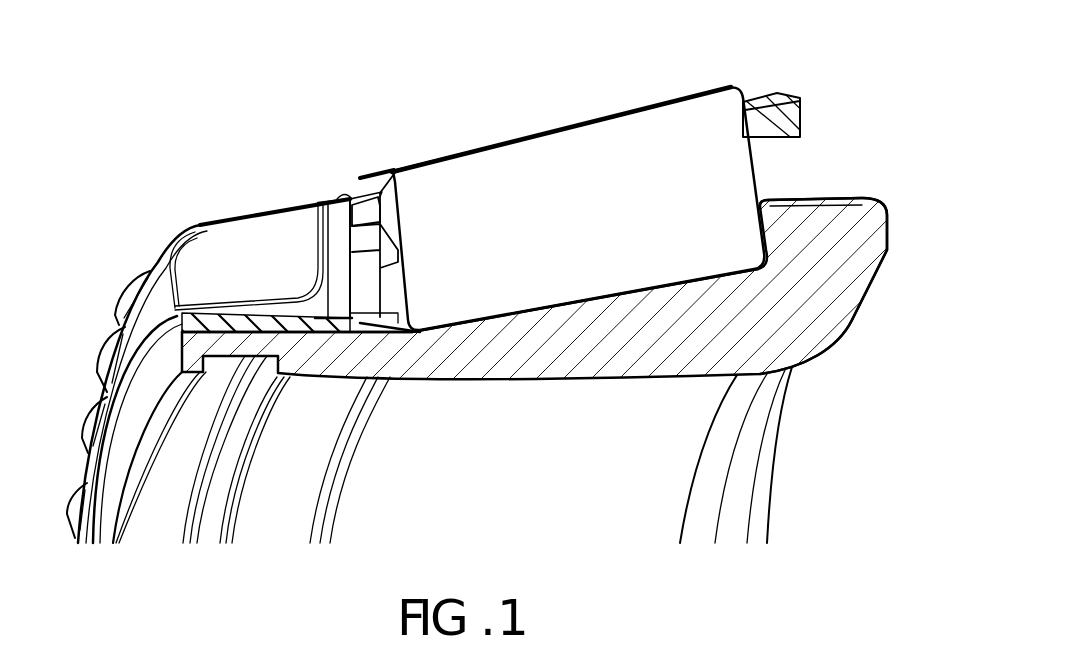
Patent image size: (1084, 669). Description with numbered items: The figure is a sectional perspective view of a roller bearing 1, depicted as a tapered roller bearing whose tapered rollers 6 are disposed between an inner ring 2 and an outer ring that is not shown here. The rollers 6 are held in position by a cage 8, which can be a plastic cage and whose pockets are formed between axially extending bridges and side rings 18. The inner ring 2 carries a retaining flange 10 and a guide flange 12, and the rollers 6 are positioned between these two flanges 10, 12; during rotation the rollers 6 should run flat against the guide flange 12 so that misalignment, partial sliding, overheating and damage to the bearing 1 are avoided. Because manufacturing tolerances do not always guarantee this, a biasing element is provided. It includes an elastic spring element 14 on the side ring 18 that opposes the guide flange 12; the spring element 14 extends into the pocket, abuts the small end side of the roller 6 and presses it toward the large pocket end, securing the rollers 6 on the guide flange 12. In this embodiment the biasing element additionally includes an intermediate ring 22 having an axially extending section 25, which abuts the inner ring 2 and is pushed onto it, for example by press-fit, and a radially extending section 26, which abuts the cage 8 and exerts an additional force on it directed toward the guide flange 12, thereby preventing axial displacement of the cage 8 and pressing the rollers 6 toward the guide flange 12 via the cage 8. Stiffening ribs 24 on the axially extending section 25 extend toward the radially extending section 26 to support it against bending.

The roller bearing 1 is at (884, 72).
The inner ring 2 is at (545, 360).
The tapered rollers 6 is at (547, 187).
The cage 8 is at (787, 113).
The retaining flange 10 is at (412, 330).
The guide flange 12 is at (793, 227).
The elastic spring element 14 is at (395, 250).
The side ring 18 is at (370, 213).
The intermediate ring 22 is at (331, 301).
The stiffening ribs 24 is at (205, 244).
The axially extending section 25 is at (265, 320).
The radially extending section 26 is at (340, 233).